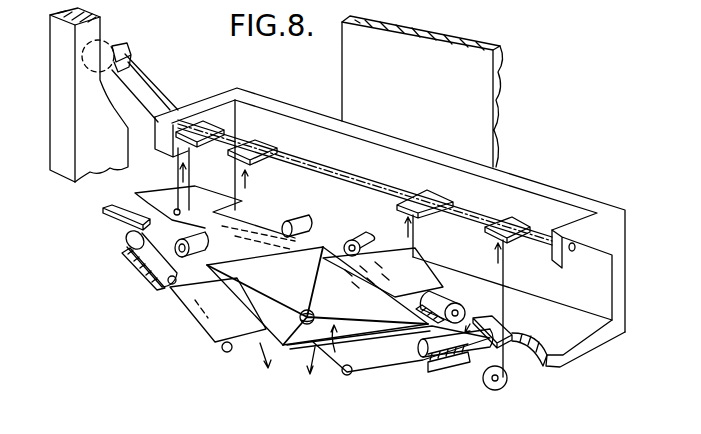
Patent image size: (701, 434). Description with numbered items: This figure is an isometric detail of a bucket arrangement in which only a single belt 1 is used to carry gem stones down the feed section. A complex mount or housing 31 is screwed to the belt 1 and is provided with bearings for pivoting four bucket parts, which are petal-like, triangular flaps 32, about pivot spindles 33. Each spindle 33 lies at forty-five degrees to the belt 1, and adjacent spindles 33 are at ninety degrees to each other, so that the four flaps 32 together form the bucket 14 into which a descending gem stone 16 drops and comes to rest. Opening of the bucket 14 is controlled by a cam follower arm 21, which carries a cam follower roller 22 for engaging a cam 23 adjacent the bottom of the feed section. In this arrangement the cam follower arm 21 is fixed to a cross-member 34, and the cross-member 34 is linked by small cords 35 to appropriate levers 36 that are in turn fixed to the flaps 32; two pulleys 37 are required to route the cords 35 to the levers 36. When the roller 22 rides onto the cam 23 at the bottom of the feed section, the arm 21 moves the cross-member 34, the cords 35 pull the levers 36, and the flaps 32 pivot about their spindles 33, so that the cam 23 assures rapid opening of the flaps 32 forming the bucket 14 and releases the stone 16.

The belt 1 is at (502, 125).
The bucket 14 is at (334, 328).
The gem stone 16 is at (304, 312).
The cam follower arm 21 is at (152, 89).
The cam follower roller 22 is at (106, 46).
The cam 23 is at (116, 147).
The mount or housing 31 is at (510, 200).
The flap 32 is at (297, 343).
The pivot spindle 33 is at (282, 218).
The cross-member 34 is at (350, 172).
The cord 35 is at (175, 168).
The lever 36 is at (104, 210).
The pulley 37 is at (150, 193).